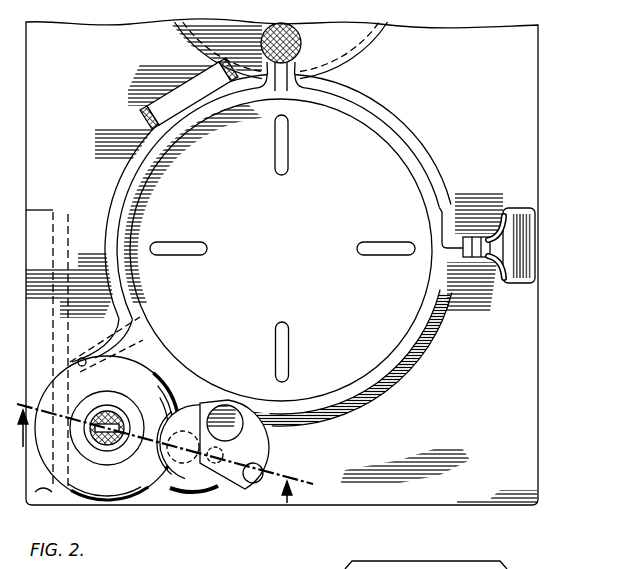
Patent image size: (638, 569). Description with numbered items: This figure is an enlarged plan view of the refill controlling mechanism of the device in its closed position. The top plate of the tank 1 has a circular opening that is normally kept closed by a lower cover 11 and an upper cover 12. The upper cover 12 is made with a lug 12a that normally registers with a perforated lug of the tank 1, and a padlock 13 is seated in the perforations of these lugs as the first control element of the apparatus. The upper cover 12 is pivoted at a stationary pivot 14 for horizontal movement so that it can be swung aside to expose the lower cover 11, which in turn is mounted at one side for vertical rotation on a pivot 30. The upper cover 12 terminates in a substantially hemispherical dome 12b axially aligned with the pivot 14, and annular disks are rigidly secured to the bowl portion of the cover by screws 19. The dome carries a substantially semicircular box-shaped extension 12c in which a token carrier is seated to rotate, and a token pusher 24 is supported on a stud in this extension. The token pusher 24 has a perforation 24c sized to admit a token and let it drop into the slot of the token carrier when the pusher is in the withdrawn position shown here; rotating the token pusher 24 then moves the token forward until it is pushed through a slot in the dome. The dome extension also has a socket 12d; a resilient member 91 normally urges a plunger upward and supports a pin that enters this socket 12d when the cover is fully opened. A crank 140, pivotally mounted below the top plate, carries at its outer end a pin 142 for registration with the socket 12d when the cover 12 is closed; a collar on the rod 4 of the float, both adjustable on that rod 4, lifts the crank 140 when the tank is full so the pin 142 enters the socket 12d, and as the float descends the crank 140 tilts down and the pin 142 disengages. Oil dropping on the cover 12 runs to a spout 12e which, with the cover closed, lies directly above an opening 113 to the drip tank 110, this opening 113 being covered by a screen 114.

The tank 1 is at (520, 386).
The lower cover 11 is at (136, 172).
The upper cover 12 is at (387, 150).
The lug 12a is at (456, 262).
The hemispherical dome 12b is at (50, 484).
The box-shaped extension 12c is at (180, 499).
The socket 12d is at (144, 342).
The spout 12e is at (322, 79).
The padlock 13 is at (523, 230).
The pivot 14 is at (124, 384).
The screw 19 is at (470, 238).
The token pusher 24 is at (251, 441).
The perforation 24c is at (233, 407).
The pivot 30 is at (143, 115).
The resilient member 91 is at (128, 323).
The drip tank 110 is at (366, 52).
The opening 113 is at (221, 62).
The screen 114 is at (302, 44).
The crank 140 is at (47, 339).
The pin 142 is at (43, 490).
The rod 4 is at (164, 445).